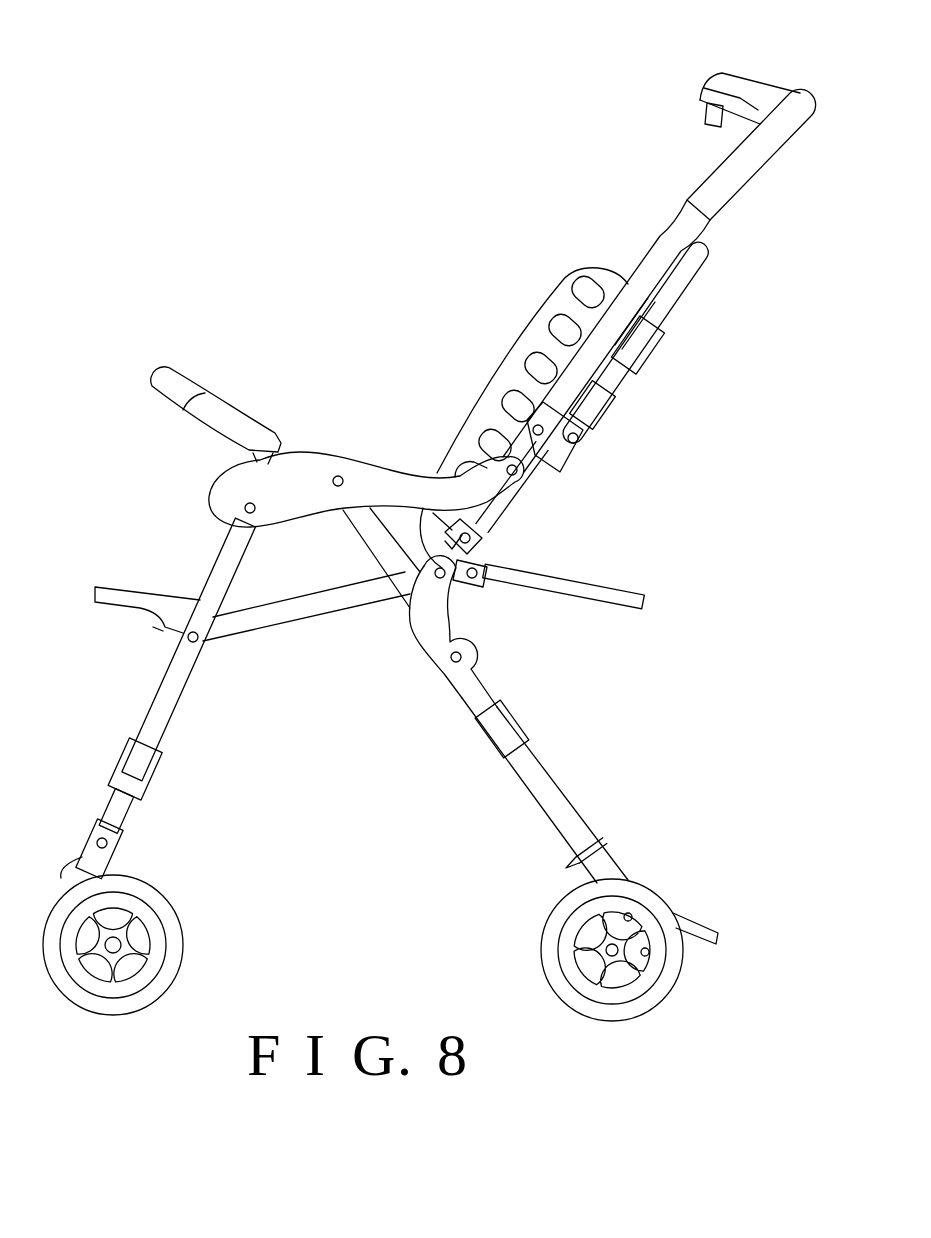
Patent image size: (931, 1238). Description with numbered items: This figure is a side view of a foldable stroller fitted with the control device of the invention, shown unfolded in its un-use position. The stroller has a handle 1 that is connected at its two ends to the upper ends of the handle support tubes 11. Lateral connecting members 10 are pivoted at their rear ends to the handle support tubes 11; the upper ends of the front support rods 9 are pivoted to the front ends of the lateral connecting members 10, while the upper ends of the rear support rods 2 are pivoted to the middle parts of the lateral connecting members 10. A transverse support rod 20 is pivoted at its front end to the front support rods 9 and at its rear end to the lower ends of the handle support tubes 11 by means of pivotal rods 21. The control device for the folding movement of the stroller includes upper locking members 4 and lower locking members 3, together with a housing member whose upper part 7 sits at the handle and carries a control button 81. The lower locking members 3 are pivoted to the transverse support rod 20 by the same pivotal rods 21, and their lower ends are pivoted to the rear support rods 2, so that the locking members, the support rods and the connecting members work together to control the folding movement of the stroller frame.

The handle 1 is at (757, 177).
The upper part of housing member 7 is at (728, 78).
The control button 81 is at (707, 120).
The handle support tubes 11 is at (663, 247).
The lateral connecting members 10 is at (367, 477).
The upper locking members 4 is at (477, 552).
The pivotal rods 21 is at (443, 577).
The lower locking members 3 is at (433, 607).
The rear support rods 2 is at (540, 780).
The transverse support rod 20 is at (292, 616).
The front support rods 9 is at (163, 690).